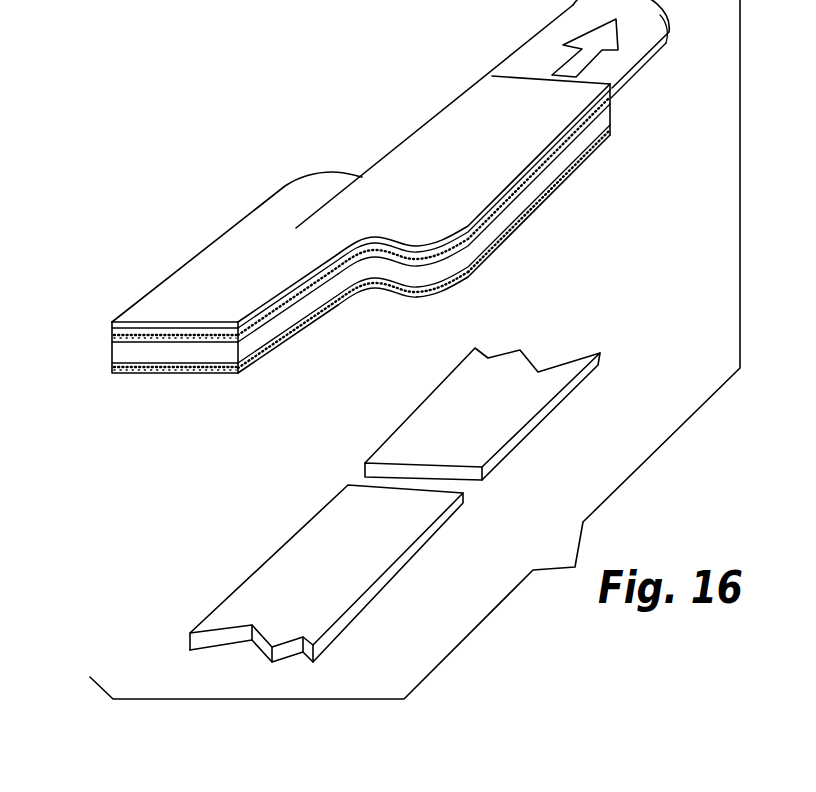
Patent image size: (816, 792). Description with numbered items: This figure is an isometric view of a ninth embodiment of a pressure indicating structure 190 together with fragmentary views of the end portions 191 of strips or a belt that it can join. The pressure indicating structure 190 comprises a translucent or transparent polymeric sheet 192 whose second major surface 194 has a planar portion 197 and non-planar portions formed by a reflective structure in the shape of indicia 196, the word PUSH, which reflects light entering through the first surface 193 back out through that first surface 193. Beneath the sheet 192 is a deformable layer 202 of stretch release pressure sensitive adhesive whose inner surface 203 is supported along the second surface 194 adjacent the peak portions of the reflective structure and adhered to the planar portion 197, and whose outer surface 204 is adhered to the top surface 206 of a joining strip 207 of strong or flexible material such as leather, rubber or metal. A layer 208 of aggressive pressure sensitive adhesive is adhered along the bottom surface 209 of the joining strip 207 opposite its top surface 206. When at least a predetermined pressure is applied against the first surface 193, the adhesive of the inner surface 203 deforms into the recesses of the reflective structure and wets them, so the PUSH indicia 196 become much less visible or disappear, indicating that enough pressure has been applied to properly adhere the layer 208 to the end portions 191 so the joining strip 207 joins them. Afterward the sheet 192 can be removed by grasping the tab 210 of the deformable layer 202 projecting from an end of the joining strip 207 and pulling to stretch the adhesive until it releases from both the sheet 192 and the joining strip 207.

The pressure indicating structure 190 is at (279, 137).
The end portions 191 is at (420, 517).
The polymeric sheet 192 is at (487, 84).
The first surface 193 is at (421, 224).
The second major surface 194 is at (185, 340).
The indicia 196 is at (427, 161).
The planar portion 197 is at (145, 343).
The deformable layer 202 is at (282, 310).
The inner surface 203 is at (127, 327).
The outer surface 204 is at (385, 260).
The top surface 206 is at (166, 340).
The joining strip 207 is at (216, 358).
The layer of aggressive pressure sensitive adhesive 208 is at (547, 198).
The bottom surface 209 is at (592, 150).
The tab 210 is at (553, 32).